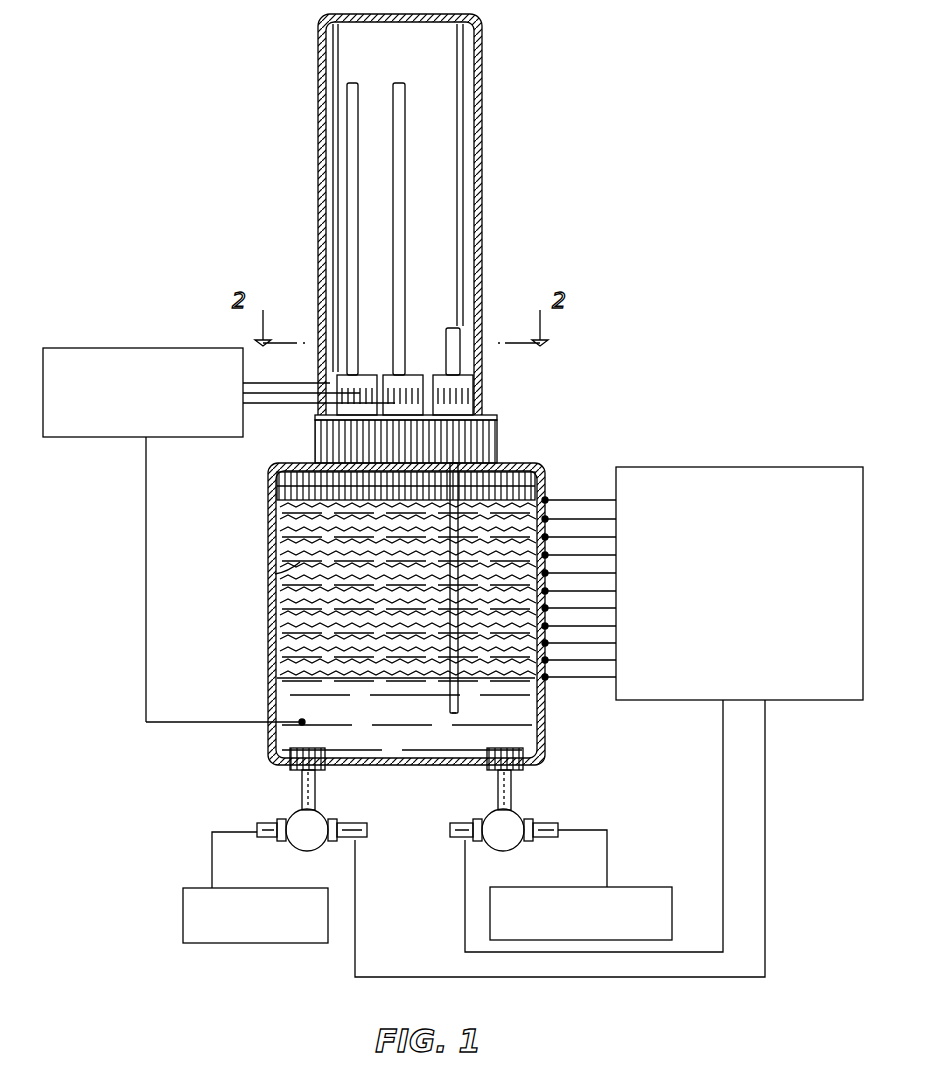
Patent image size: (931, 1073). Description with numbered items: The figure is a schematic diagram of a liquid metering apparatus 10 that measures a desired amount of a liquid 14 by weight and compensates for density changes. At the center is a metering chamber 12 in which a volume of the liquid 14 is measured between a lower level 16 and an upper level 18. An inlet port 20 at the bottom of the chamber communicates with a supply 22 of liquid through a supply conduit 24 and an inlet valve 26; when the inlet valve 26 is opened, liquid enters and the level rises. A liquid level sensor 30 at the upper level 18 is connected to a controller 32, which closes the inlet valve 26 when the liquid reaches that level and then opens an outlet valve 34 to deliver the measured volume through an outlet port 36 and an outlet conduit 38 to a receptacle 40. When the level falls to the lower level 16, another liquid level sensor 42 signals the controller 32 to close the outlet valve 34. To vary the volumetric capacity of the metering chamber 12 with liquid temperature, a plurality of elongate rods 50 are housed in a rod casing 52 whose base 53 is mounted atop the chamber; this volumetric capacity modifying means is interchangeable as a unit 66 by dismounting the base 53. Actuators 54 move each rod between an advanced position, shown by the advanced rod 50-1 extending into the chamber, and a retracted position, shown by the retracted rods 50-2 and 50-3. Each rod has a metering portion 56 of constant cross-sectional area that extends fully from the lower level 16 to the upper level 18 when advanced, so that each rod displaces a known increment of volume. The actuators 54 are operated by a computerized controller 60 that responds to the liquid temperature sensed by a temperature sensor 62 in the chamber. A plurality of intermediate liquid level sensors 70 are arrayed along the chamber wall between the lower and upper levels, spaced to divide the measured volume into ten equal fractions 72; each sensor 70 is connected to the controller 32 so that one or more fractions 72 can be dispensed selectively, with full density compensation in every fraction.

The liquid metering apparatus 10 is at (322, 20).
The metering chamber 12 is at (270, 540).
The liquid 14 is at (406, 592).
The lower level 16 is at (272, 700).
The upper level 18 is at (290, 488).
The inlet port 20 is at (290, 750).
The supply 22 is at (266, 890).
The supply conduit 24 is at (268, 822).
The inlet valve 26 is at (310, 830).
The liquid level sensor 30 is at (548, 500).
The controller 32 is at (776, 462).
The outlet valve 34 is at (496, 822).
The outlet port 36 is at (505, 750).
The outlet conduit 38 is at (550, 828).
The receptacle 40 is at (572, 888).
The liquid level sensor 42 is at (548, 688).
The elongate rods 50 is at (398, 83).
The advanced rod 50-1 is at (456, 487).
The retracted rod 50-2 is at (400, 140).
The retracted rod 50-3 is at (352, 108).
The rod casing 52 is at (482, 186).
The base 53 is at (497, 440).
The actuators 54 is at (300, 440).
The metering portion 56 is at (450, 590).
The computerized controller 60 is at (158, 344).
The temperature sensor 62 is at (304, 722).
The unit 66 is at (497, 417).
The intermediate liquid level sensors 70 is at (538, 610).
The equal fractions 72 is at (275, 600).